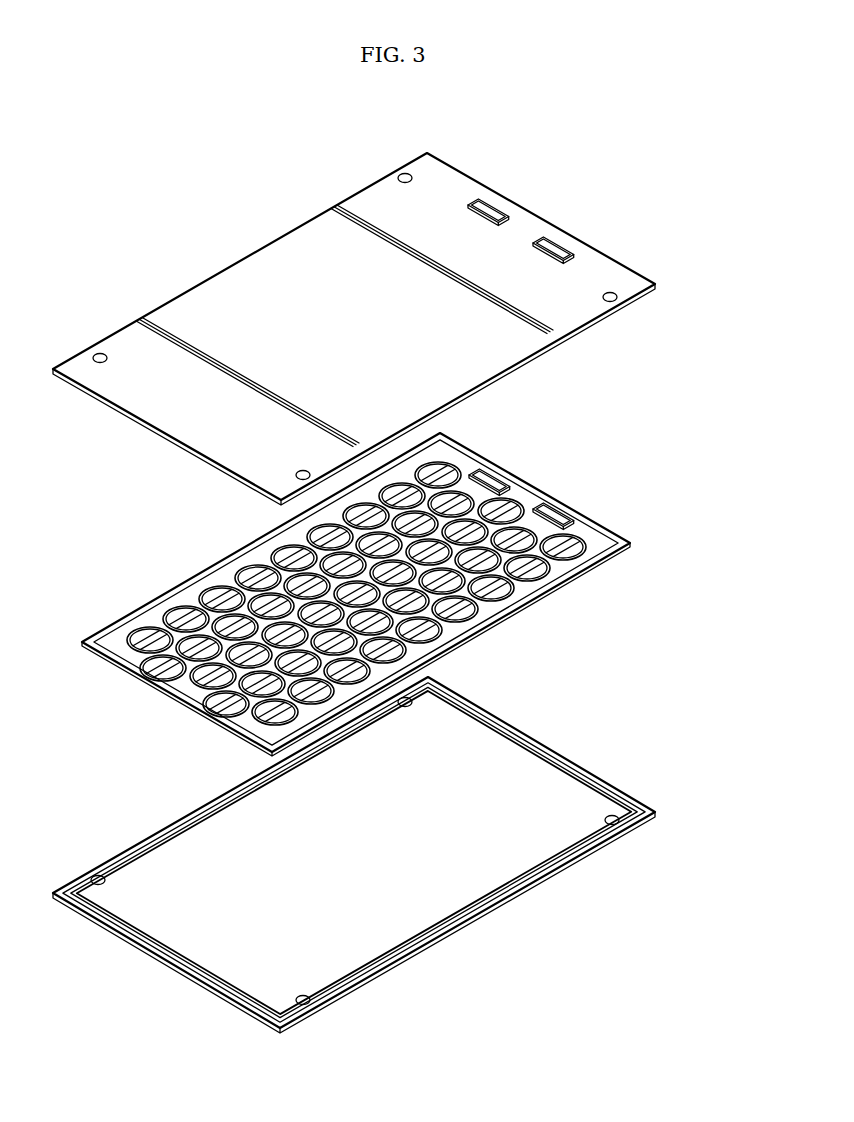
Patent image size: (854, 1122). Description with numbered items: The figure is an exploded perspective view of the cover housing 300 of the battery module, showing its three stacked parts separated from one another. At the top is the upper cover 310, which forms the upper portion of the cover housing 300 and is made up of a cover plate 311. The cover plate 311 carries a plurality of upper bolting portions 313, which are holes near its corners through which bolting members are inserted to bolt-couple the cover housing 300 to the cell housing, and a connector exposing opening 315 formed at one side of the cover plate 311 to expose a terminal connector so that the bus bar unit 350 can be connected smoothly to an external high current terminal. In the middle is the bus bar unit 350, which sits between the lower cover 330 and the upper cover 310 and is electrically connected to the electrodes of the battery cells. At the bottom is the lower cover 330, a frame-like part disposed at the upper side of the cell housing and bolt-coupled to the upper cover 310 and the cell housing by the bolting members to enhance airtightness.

The cover housing 300 is at (144, 176).
The upper cover 310 is at (399, 313).
The cover plate 311 is at (248, 282).
The upper bolting portion 313 is at (402, 174).
The connector exposing opening 315 is at (492, 210).
The bus bar unit 350 is at (645, 540).
The lower cover 330 is at (668, 804).